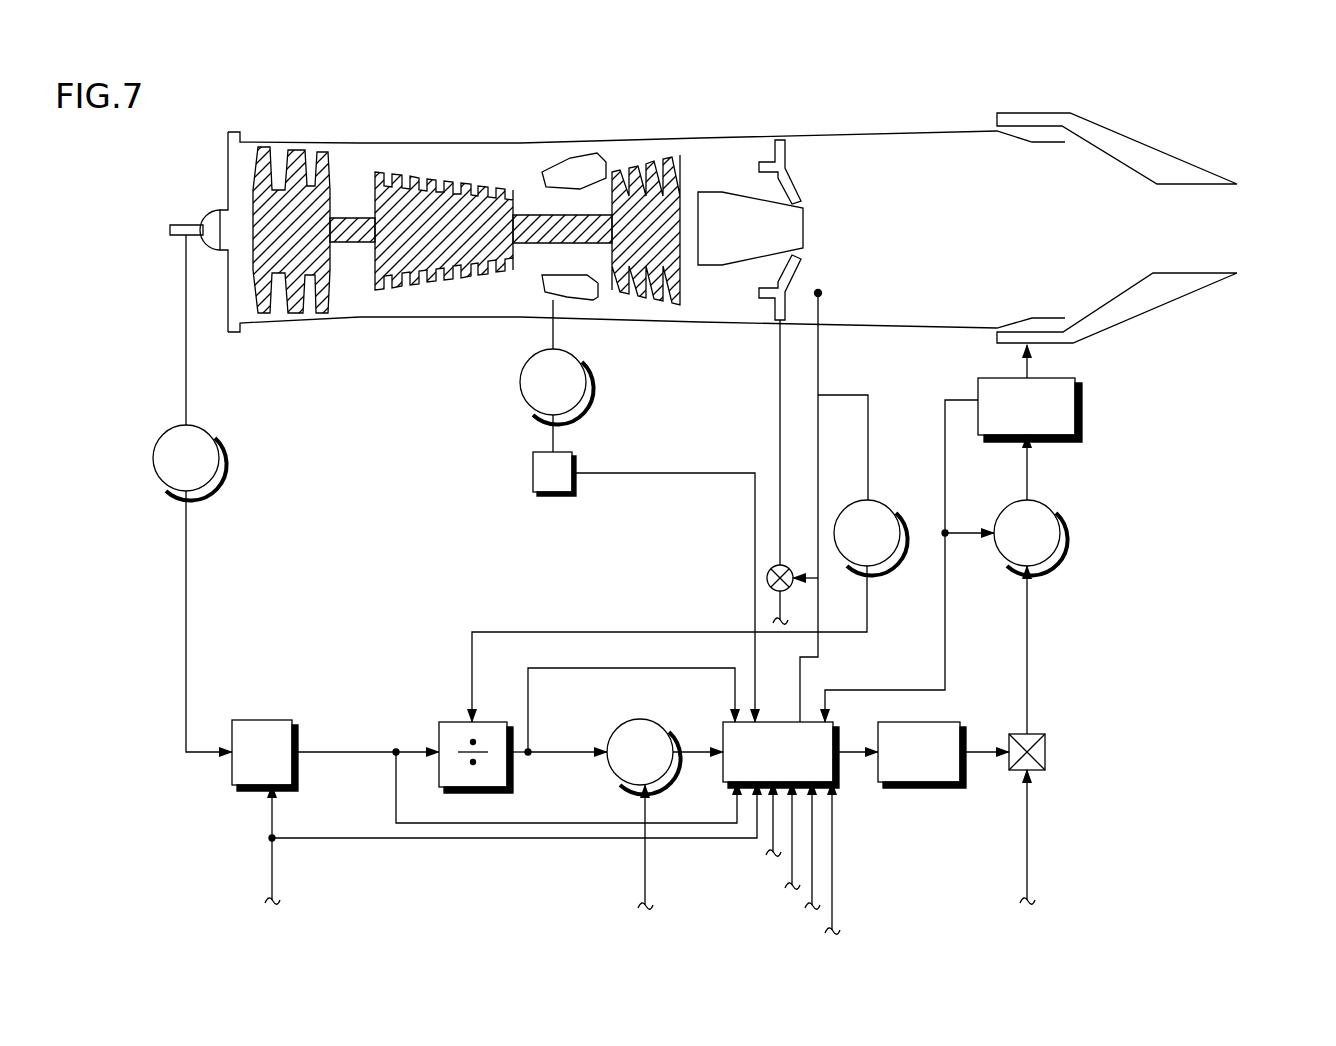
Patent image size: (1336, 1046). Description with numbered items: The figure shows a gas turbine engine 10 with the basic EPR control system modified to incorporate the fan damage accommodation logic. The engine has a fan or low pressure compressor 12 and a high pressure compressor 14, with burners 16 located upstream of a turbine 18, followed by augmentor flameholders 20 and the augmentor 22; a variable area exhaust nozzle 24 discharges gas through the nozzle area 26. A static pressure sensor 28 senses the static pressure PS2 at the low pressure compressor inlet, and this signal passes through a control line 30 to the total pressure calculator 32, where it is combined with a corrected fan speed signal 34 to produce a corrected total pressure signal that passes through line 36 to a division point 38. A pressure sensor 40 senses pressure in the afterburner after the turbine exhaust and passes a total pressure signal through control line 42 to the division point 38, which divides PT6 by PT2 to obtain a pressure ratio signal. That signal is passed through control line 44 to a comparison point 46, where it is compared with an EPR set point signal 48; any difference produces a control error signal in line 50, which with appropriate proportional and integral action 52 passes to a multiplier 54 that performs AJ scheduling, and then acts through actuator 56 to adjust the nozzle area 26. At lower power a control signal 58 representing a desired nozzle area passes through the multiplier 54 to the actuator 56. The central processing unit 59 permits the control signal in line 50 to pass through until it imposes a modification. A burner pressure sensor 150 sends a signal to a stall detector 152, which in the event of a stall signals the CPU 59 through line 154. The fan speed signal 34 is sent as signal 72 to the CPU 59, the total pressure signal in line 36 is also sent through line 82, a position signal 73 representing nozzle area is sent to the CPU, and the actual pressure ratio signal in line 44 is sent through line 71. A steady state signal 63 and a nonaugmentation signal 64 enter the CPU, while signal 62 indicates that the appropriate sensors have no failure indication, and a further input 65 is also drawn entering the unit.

The gas turbine engine 10 is at (746, 133).
The fan or low pressure compressor 12 is at (257, 158).
The high pressure compressor 14 is at (400, 180).
The burners 16 is at (586, 158).
The turbine 18 is at (664, 160).
The augmentor flameholders 20 is at (793, 186).
The augmentor 22 is at (955, 232).
The variable area exhaust nozzle 24 is at (1120, 133).
The nozzle area 26 is at (1226, 205).
The static pressure sensor 28 is at (168, 428).
The control line 30 is at (188, 607).
The total pressure (PT2) calculator 32 is at (262, 718).
The corrected fan speed signal 34 is at (274, 870).
The line 36 is at (322, 752).
The division point 38 is at (483, 720).
The pressure sensor 40 is at (890, 512).
The control line 42 is at (630, 630).
The control line 44 is at (552, 753).
The comparison point 46 is at (665, 728).
The EPR set point signal 48 is at (645, 868).
The line 50 is at (687, 755).
The proportional and integral action 52 is at (945, 718).
The multiplier 54 is at (1040, 718).
The actuator 56 is at (1078, 428).
The control signal 58 is at (1035, 862).
The central processing unit 59 is at (838, 713).
The signal 62 is at (768, 850).
The steady state signal 63 is at (786, 882).
The nonaugmentation signal 64 is at (806, 902).
The input signal line 65 is at (826, 922).
The line 71 is at (578, 670).
The signal 72 is at (340, 843).
The position signal 73 is at (962, 400).
The line 82 is at (505, 822).
The burner pressure sensor 150 is at (520, 368).
The stall detector 152 is at (568, 452).
The line 154 is at (660, 473).